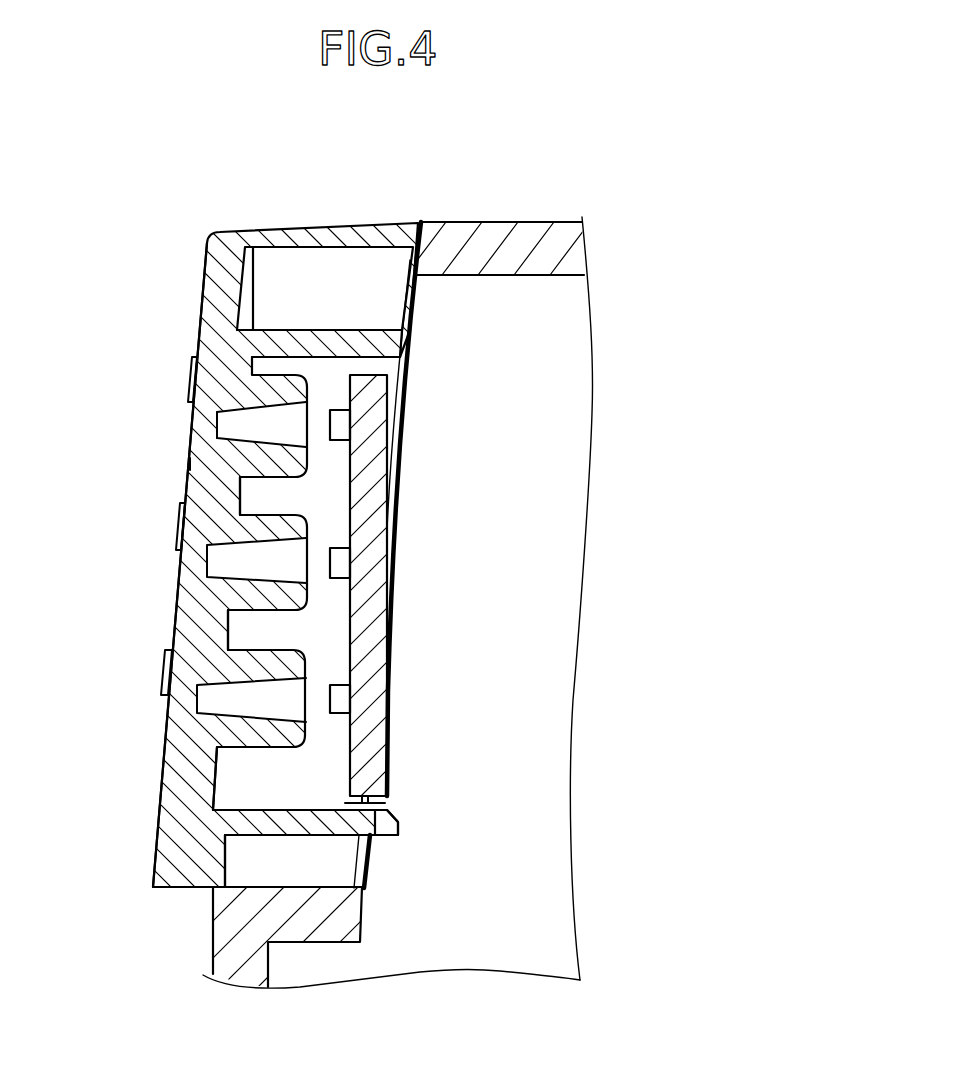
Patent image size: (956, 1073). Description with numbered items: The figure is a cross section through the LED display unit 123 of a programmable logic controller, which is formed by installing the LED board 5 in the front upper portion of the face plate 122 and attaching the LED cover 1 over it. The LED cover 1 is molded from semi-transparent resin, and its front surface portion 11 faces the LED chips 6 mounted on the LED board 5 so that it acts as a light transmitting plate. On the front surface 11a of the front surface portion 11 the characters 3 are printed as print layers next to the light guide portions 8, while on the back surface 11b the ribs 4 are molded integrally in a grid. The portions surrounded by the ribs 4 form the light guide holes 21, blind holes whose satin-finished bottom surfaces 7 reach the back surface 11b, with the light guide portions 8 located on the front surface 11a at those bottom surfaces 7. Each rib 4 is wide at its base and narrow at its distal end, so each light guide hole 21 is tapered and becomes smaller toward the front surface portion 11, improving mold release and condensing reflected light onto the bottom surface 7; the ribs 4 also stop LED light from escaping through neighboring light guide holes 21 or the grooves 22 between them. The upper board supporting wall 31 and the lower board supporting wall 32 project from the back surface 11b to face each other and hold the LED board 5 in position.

The LED cover 1 is at (215, 268).
The front surface portion 11 is at (192, 735).
The front surface 11a is at (206, 298).
The back surface 11b is at (240, 295).
The characters 3 is at (192, 368).
The ribs 4 is at (258, 735).
The LED board 5 is at (372, 365).
The LED chips 6 is at (345, 424).
The bottom surface 7 is at (214, 425).
The light guide portions 8 is at (191, 463).
The light guide holes 21 is at (262, 422).
The grooves 22 is at (260, 489).
The upper board supporting wall 31 is at (311, 345).
The lower board supporting wall 32 is at (288, 822).
The face plate 122 is at (502, 248).
The LED display unit 123 is at (416, 212).